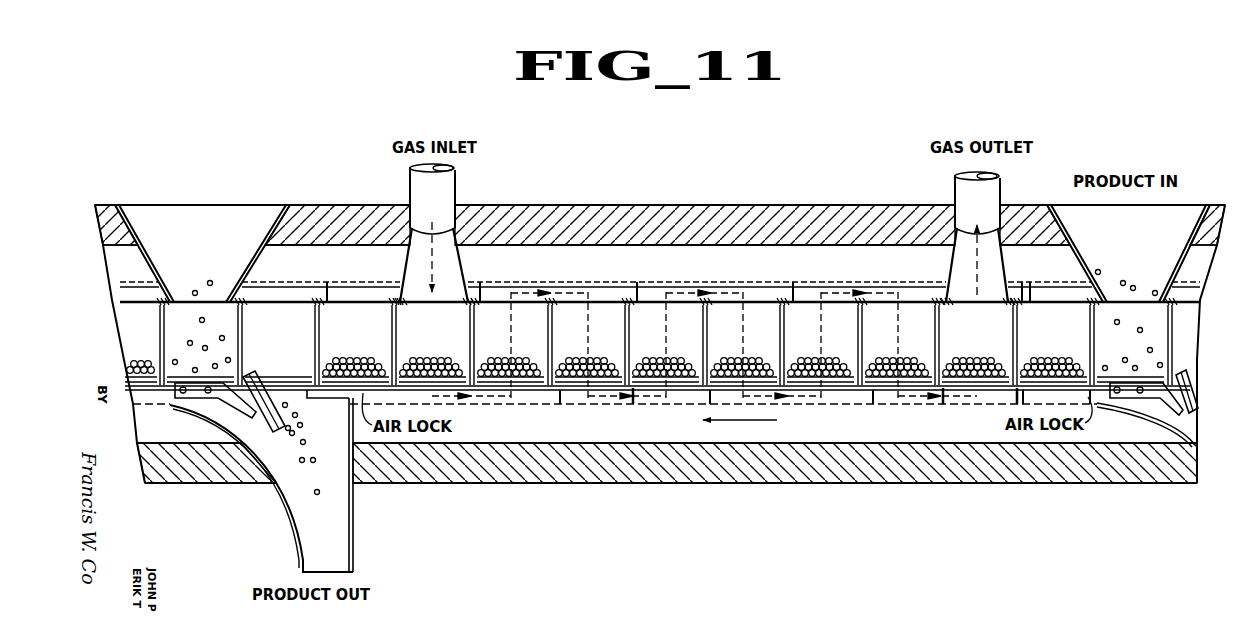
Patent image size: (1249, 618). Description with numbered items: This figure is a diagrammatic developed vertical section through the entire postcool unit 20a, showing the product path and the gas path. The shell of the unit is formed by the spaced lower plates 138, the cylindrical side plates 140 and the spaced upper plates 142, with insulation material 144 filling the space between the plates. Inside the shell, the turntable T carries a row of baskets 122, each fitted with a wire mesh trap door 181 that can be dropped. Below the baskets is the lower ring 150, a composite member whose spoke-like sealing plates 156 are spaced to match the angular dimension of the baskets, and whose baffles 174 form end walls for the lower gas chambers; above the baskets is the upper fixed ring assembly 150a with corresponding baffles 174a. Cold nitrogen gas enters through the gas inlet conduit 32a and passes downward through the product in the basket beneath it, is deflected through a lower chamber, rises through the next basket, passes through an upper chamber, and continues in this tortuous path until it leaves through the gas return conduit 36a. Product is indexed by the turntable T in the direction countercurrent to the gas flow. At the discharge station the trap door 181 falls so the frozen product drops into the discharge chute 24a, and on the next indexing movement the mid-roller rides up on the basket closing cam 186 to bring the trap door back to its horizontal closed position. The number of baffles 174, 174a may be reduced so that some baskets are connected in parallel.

The postcool unit 20a is at (684, 202).
The gas inlet conduit 32a is at (438, 192).
The gas return conduit 36a is at (985, 192).
The upper plates 142 is at (633, 242).
The insulation material 144 is at (848, 221).
The lower plates 138 is at (600, 446).
The cylindrical side plates 140 is at (735, 275).
The upper fixed ring assembly 150a is at (393, 293).
The turntable T is at (619, 292).
The upper baffles 174a is at (798, 288).
The baffles 174 is at (867, 393).
The baskets 122 is at (386, 325).
The wire mesh trap door 181 is at (342, 367).
The basket closing cam 186 is at (237, 398).
The lower ring 150 is at (580, 401).
The sealing plates 156 is at (697, 387).
The discharge chute 24a is at (353, 532).